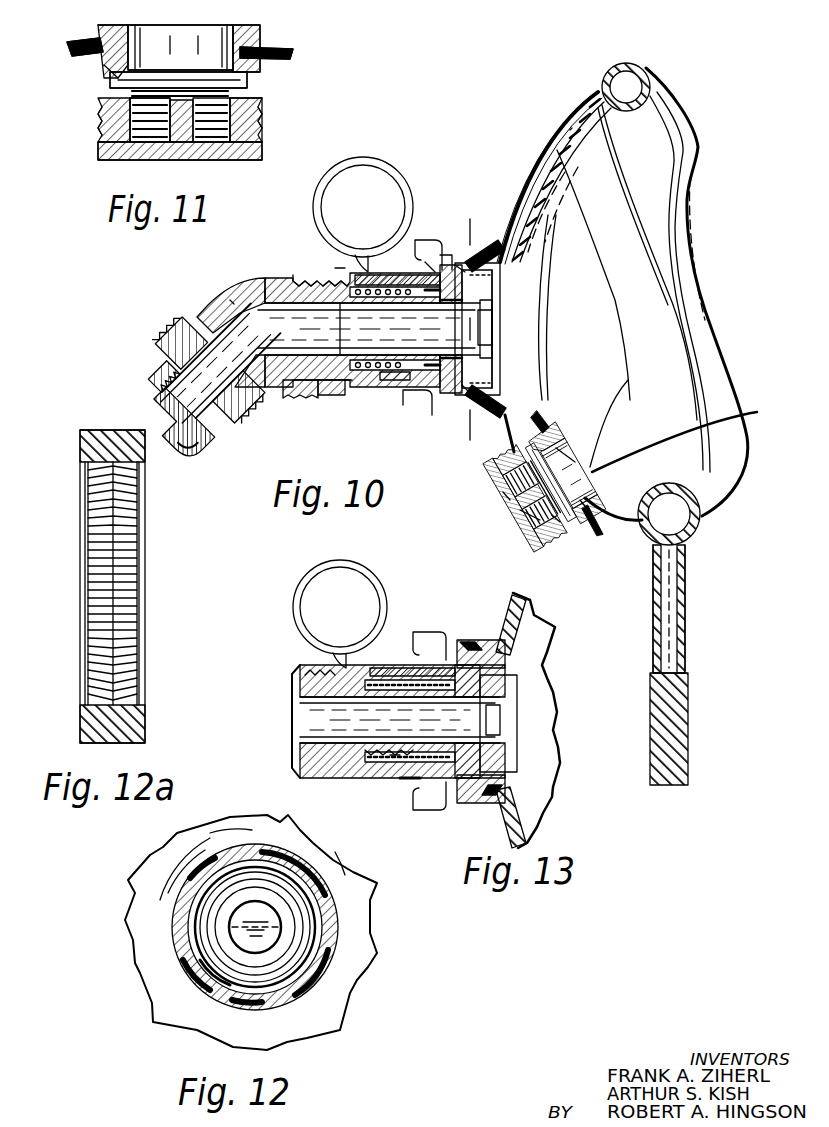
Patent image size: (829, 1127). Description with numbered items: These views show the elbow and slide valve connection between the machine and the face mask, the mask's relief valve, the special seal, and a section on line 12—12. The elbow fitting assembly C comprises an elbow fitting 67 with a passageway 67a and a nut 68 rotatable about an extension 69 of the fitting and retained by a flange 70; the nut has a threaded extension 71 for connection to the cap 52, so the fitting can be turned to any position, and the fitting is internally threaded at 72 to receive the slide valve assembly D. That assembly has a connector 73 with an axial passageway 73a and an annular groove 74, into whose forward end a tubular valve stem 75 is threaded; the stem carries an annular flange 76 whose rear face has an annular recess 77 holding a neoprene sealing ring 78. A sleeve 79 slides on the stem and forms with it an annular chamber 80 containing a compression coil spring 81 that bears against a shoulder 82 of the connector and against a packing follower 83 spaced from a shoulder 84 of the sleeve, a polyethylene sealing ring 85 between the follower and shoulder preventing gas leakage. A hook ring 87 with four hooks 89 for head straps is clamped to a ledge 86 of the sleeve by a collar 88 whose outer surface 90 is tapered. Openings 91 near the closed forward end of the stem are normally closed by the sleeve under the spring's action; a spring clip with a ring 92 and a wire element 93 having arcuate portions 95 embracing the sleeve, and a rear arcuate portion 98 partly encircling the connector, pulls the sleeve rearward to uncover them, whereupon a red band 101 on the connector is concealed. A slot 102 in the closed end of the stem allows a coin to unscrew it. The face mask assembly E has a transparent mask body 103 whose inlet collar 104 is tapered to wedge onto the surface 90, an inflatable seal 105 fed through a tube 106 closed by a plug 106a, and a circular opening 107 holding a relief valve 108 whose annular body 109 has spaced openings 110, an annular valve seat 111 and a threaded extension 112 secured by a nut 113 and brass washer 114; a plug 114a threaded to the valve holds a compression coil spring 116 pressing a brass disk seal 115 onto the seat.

In FIG. 10, the arrow / direction of flow 12 is at (460, 215).
In FIG. 10, the cap 52 is at (160, 362).
In FIG. 10, the elbow fitting 67 is at (245, 292).
In FIG. 13, the elbow fitting 67 is at (312, 690).
In FIG. 10, the passageway 67a is at (266, 305).
In FIG. 10, the nut 68 is at (170, 320).
In FIG. 10, the extension 69 is at (240, 422).
In FIG. 10, the flange 70 is at (183, 445).
In FIG. 10, the threaded extension 71 is at (214, 450).
In FIG. 10, the internal threads 72 is at (302, 280).
In FIG. 10, the connector 73 is at (333, 383).
In FIG. 13, the connector 73 is at (310, 670).
In FIG. 10, the axial passageway 73a is at (290, 386).
In FIG. 10, the annular groove 74 is at (330, 285).
In FIG. 10, the valve stem 75 is at (389, 382).
In FIG. 13, the valve stem 75 is at (438, 790).
In FIG. 12, the valve stem 75 is at (248, 900).
In FIG. 10, the annular flange 76 is at (492, 288).
In FIG. 13, the annular flange 76 is at (498, 690).
In FIG. 10, the annular recess 77 is at (478, 252).
In FIG. 13, the annular recess 77 is at (470, 655).
In FIG. 10, the sealing ring 78 is at (462, 318).
In FIG. 13, the sealing ring 78 is at (510, 770).
In FIG. 12, the sealing ring 78 is at (285, 905).
In FIG. 10, the sleeve 79 is at (395, 285).
In FIG. 13, the sleeve 79 is at (398, 676).
In FIG. 10, the annular chamber 80 is at (358, 370).
In FIG. 10, the compression coil spring 81 is at (400, 372).
In FIG. 13, the compression coil spring 81 is at (404, 770).
In FIG. 10, the shoulder 82 is at (340, 265).
In FIG. 10, the packing follower 83 is at (428, 265).
In FIG. 10, the shoulder 84 is at (445, 258).
In FIG. 10, the sealing ring 85 is at (430, 395).
In FIG. 12A, the sealing ring 85 is at (104, 432).
In FIG. 10, the annular shoulder 86 is at (458, 268).
In FIG. 10, the hook ring 87 is at (466, 430).
In FIG. 10, the collar 88 is at (470, 425).
In FIG. 12, the collar 88 is at (300, 880).
In FIG. 10, the hooks 89 is at (420, 268).
In FIG. 10, the outer surface 90 is at (476, 262).
In FIG. 12, the outer surface 90 is at (280, 860).
In FIG. 10, the openings 91 is at (482, 360).
In FIG. 13, the openings 91 is at (497, 716).
In FIG. 12, the openings 91 is at (288, 920).
In FIG. 10, the ring 92 is at (345, 162).
In FIG. 13, the ring 92 is at (368, 560).
In FIG. 10, the wire element 93 is at (366, 262).
In FIG. 13, the wire element 93 is at (345, 660).
In FIG. 13, the arcuate portions 95 is at (385, 755).
In FIG. 13, the arcuate portion 98 is at (300, 720).
In FIG. 10, the red band 101 is at (339, 383).
In FIG. 10, the slot 102 is at (478, 330).
In FIG. 13, the slot 102 is at (500, 722).
In FIG. 11, the mask body 103 is at (252, 74).
In FIG. 10, the mask body 103 is at (543, 180).
In FIG. 12, the mask body 103 is at (362, 962).
In FIG. 10, the inlet collar 104 is at (475, 398).
In FIG. 12, the inlet collar 104 is at (180, 960).
In FIG. 10, the inflatable seal 105 is at (616, 63).
In FIG. 10, the tube 106 is at (686, 612).
In FIG. 10, the closure plug 106a is at (688, 765).
In FIG. 11, the circular opening 107 is at (233, 28).
In FIG. 10, the circular opening 107 is at (553, 455).
In FIG. 11, the valve 108 is at (125, 25).
In FIG. 11, the annular body 109 is at (110, 62).
In FIG. 10, the annular body 109 is at (582, 503).
In FIG. 11, the openings 110 is at (247, 90).
In FIG. 11, the annular valve seat 111 is at (260, 112).
In FIG. 11, the threaded extension 112 is at (96, 32).
In FIG. 11, the nut 113 is at (260, 42).
In FIG. 10, the nut 113 is at (687, 435).
In FIG. 11, the washer 114 is at (288, 52).
In FIG. 11, the plug 114a is at (232, 158).
In FIG. 10, the plug 114a is at (532, 518).
In FIG. 11, the disk seal 115 is at (104, 120).
In FIG. 10, the disk seal 115 is at (508, 500).
In FIG. 11, the compression coil spring 116 is at (150, 130).
In FIG. 10, the compression coil spring 116 is at (552, 515).
In FIG. 10, the elbow fitting assembly C is at (200, 298).
In FIG. 10, the slide valve assembly D is at (346, 392).
In FIG. 13, the slide valve assembly D is at (383, 788).
In FIG. 10, the face mask assembly E is at (543, 148).